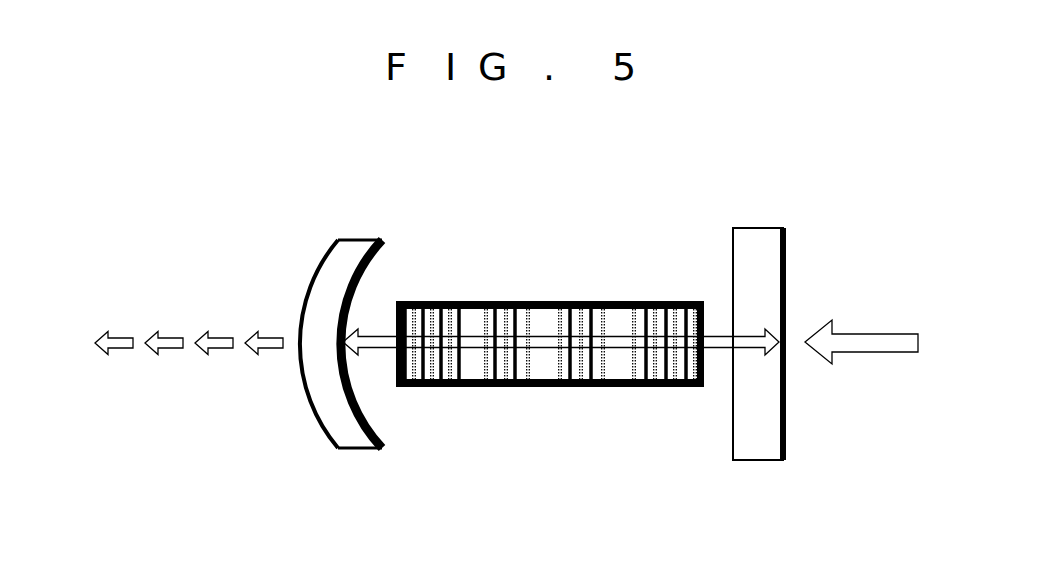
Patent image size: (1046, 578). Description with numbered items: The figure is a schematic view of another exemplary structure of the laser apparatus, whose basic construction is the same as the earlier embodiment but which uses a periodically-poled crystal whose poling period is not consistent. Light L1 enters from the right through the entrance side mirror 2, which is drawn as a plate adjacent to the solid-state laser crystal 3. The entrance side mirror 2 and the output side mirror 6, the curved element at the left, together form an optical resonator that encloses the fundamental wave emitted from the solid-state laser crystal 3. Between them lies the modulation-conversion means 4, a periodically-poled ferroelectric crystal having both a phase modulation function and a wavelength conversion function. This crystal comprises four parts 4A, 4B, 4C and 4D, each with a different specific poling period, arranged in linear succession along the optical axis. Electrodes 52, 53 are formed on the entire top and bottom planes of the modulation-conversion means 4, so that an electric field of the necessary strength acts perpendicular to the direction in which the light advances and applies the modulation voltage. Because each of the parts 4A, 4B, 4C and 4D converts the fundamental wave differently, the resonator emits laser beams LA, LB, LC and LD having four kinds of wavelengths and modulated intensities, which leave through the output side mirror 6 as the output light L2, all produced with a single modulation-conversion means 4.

The entrance side mirror 2 is at (786, 276).
The solid-state laser crystal 3 is at (775, 300).
The modulation-conversion means 4 is at (567, 299).
The 4A part 4A is at (660, 296).
The 4B part 4B is at (578, 296).
The 4C part 4C is at (503, 296).
The 4D part 4D is at (432, 296).
The electrode 52 is at (567, 237).
The electrode 53 is at (550, 429).
The output side mirror 6 is at (331, 319).
The incident light L1 is at (853, 343).
The output light L2 is at (192, 396).
The laser beam LA is at (117, 360).
The laser beam LB is at (167, 360).
The laser beam LC is at (217, 360).
The laser beam LD is at (267, 360).